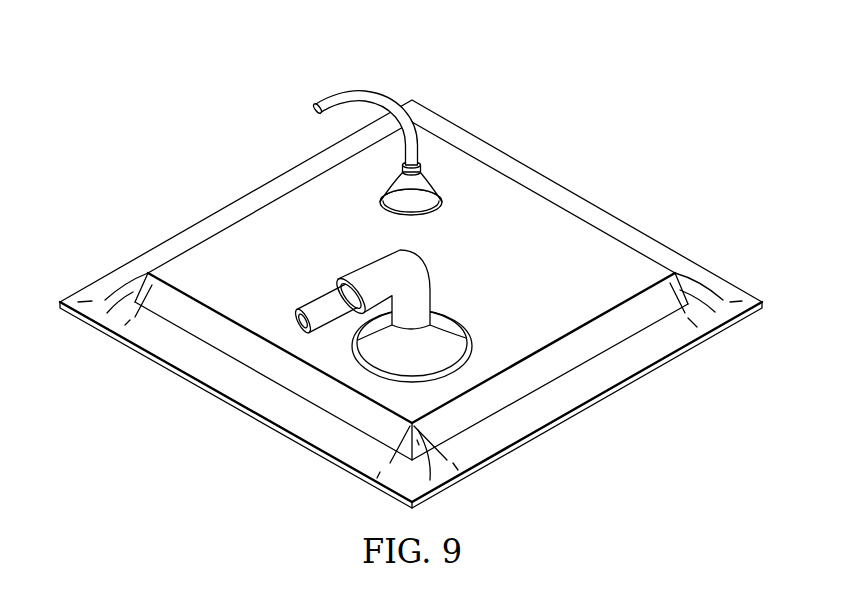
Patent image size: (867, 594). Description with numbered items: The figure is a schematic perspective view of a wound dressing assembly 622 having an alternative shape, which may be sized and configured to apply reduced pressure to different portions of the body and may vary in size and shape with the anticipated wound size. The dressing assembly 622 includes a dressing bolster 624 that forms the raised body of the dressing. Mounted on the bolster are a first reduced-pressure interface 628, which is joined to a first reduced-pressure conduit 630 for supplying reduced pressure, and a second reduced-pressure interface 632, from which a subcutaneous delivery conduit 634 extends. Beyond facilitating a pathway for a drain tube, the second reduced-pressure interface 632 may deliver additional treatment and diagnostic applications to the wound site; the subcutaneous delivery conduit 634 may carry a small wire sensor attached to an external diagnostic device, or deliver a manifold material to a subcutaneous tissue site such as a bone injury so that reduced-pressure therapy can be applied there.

The dressing assembly 622 is at (205, 144).
The dressing bolster 624 is at (596, 242).
The first reduced-pressure interface 628 is at (460, 293).
The first reduced-pressure conduit 630 is at (323, 295).
The second reduced-pressure interface 632 is at (440, 189).
The subcutaneous delivery conduit 634 is at (366, 91).